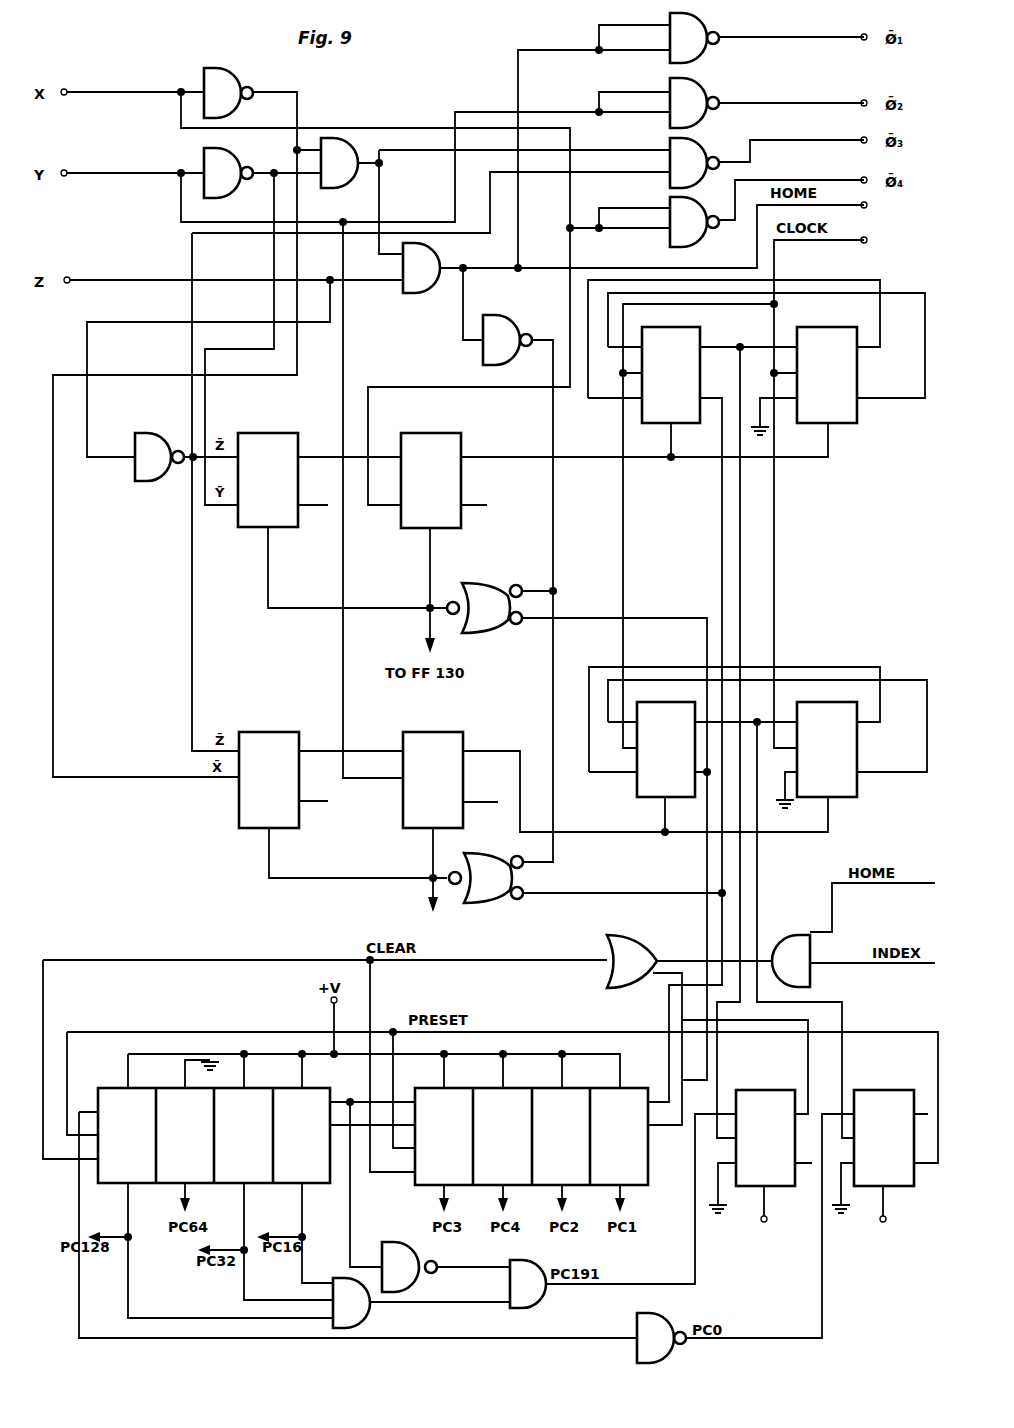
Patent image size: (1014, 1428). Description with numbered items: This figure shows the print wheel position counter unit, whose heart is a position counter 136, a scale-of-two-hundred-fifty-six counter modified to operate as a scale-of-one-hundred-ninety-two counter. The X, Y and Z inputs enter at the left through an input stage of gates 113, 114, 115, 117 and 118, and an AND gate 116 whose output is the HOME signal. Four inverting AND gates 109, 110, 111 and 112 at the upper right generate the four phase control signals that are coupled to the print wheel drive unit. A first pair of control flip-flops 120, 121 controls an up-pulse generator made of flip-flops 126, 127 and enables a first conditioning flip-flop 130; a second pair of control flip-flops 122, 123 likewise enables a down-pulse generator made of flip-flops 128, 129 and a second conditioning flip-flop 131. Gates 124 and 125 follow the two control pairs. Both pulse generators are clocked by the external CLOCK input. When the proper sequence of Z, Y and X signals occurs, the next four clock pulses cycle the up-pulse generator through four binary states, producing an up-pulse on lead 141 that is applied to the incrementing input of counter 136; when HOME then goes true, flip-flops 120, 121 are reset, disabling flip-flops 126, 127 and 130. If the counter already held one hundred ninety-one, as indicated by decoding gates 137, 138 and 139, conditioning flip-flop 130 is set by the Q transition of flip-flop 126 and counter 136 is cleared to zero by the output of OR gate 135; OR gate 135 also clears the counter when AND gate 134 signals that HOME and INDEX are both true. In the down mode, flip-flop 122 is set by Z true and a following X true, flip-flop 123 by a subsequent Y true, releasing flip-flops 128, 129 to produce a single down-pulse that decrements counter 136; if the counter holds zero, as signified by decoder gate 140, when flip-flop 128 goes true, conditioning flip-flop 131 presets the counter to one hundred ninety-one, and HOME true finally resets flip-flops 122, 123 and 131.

The inverting AND gate 109 is at (690, 30).
The inverting AND gate 110 is at (692, 98).
The inverting AND gate 111 is at (690, 156).
The inverting AND gate 112 is at (688, 212).
The inverter gate 113 is at (212, 80).
The inverter gate 114 is at (224, 168).
The AND gate 115 is at (342, 170).
The AND gate 116 is at (425, 262).
The NAND gate 117 is at (498, 325).
The inverter gate 118 is at (150, 440).
The control flip-flop 120 is at (268, 438).
The control flip-flop 121 is at (432, 440).
The control flip-flop 122 is at (268, 738).
The control flip-flop 123 is at (430, 740).
The OR gate 124 is at (486, 592).
The OR gate 125 is at (492, 862).
The up-pulse generator flip-flop 126 is at (695, 335).
The up-pulse generator flip-flop 127 is at (824, 335).
The down-pulse generator flip-flop 128 is at (636, 790).
The down-pulse generator flip-flop 129 is at (857, 793).
The first conditioning flip-flop 130 is at (766, 1095).
The second conditioning flip-flop 131 is at (890, 1095).
The AND gate 134 is at (796, 935).
The OR gate 135 is at (617, 952).
The position counter 136 is at (113, 1098).
The decoding gate 137 is at (360, 1310).
The decoding gate 138 is at (398, 1250).
The decoding gate 139 is at (508, 1306).
The decoder gate 140 is at (640, 1325).
The lead 141 is at (722, 523).